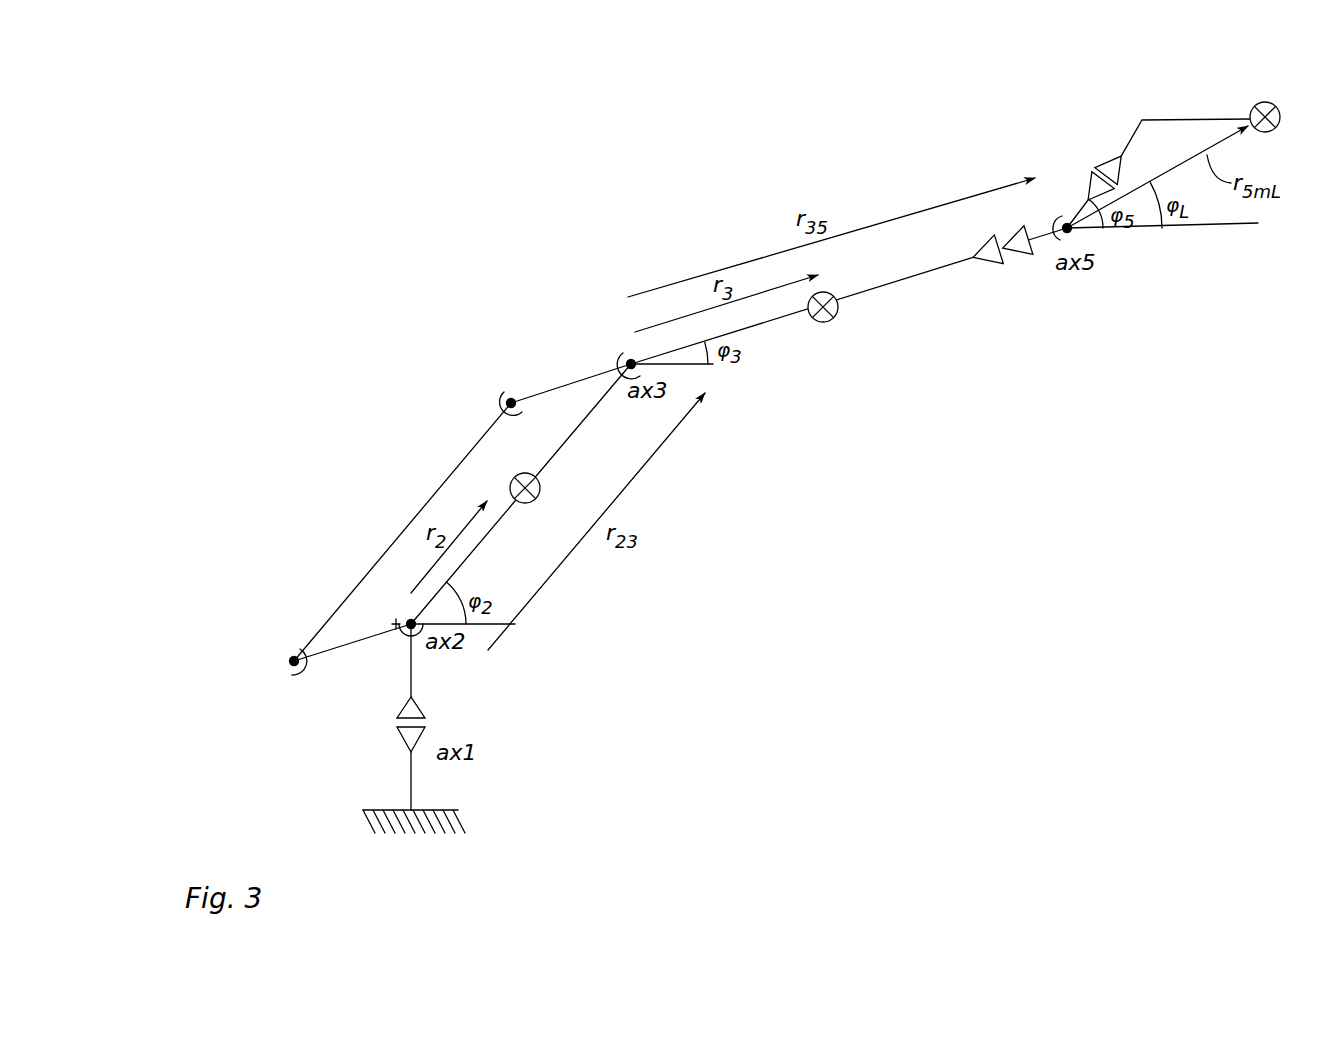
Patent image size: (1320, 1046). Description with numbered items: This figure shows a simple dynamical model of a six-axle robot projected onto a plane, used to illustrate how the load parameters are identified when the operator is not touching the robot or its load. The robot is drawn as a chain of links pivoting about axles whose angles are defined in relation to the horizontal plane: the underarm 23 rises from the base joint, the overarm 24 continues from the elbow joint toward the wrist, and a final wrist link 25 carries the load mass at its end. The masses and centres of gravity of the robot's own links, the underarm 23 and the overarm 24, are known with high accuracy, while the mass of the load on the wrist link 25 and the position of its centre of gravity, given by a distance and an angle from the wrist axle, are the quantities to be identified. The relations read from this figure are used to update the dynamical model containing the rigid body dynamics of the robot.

The underarm 23 is at (575, 418).
The overarm 24 is at (770, 323).
The wrist link to load 25 is at (1177, 118).